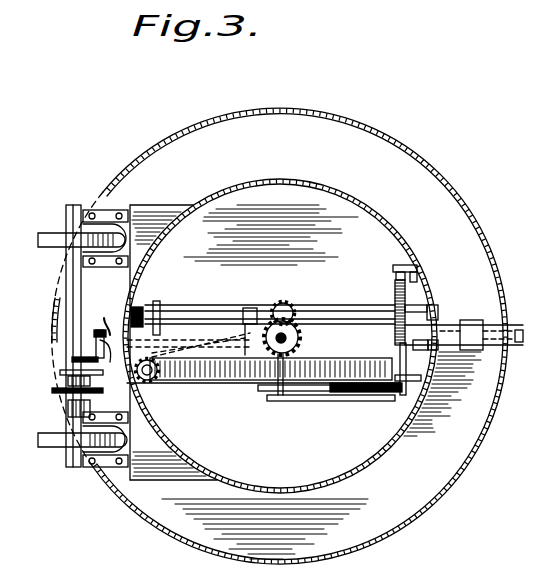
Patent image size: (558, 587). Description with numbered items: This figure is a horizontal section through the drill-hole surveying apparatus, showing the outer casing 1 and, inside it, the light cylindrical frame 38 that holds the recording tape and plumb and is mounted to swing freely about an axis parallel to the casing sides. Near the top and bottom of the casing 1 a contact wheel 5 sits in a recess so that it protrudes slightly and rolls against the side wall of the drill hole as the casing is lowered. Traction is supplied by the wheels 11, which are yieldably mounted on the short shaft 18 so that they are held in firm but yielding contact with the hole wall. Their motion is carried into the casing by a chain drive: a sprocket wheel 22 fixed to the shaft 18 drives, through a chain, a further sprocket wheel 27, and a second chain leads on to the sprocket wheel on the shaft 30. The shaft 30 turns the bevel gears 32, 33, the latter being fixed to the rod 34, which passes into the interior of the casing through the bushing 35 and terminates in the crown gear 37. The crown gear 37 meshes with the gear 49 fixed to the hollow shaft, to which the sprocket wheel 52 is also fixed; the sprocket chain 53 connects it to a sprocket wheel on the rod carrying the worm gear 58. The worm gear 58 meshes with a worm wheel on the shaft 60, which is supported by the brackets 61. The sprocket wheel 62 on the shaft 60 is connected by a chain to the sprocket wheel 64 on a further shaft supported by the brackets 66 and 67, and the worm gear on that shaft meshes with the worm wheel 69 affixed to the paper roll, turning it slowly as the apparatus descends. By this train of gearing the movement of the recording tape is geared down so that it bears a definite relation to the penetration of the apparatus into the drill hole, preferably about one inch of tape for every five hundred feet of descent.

The casing 1 is at (331, 121).
The cylindrical frame 38 is at (338, 191).
The shaft 18 is at (76, 210).
The wheel 11 is at (38, 240).
The bushing 35 is at (112, 325).
The bevel gear 33 is at (100, 330).
The bevel gear 32 is at (60, 358).
The sprocket wheel 27 is at (60, 372).
The sprocket wheel 22 is at (52, 390).
The shaft 30 is at (105, 364).
The rod 34 is at (158, 316).
The sprocket chain 53 is at (188, 347).
The bracket 61 is at (352, 356).
The worm gear 58 is at (149, 381).
The crown gear 37 is at (248, 307).
The sprocket wheel 52 is at (293, 308).
The gear 49 is at (281, 318).
The sprocket wheel 62 is at (258, 388).
The shaft 60 is at (280, 402).
The sprocket wheel 64 is at (400, 392).
The bracket 66 is at (405, 376).
The worm wheel 69 is at (395, 283).
The bracket 67 is at (417, 271).
The contact wheel 5 is at (516, 331).